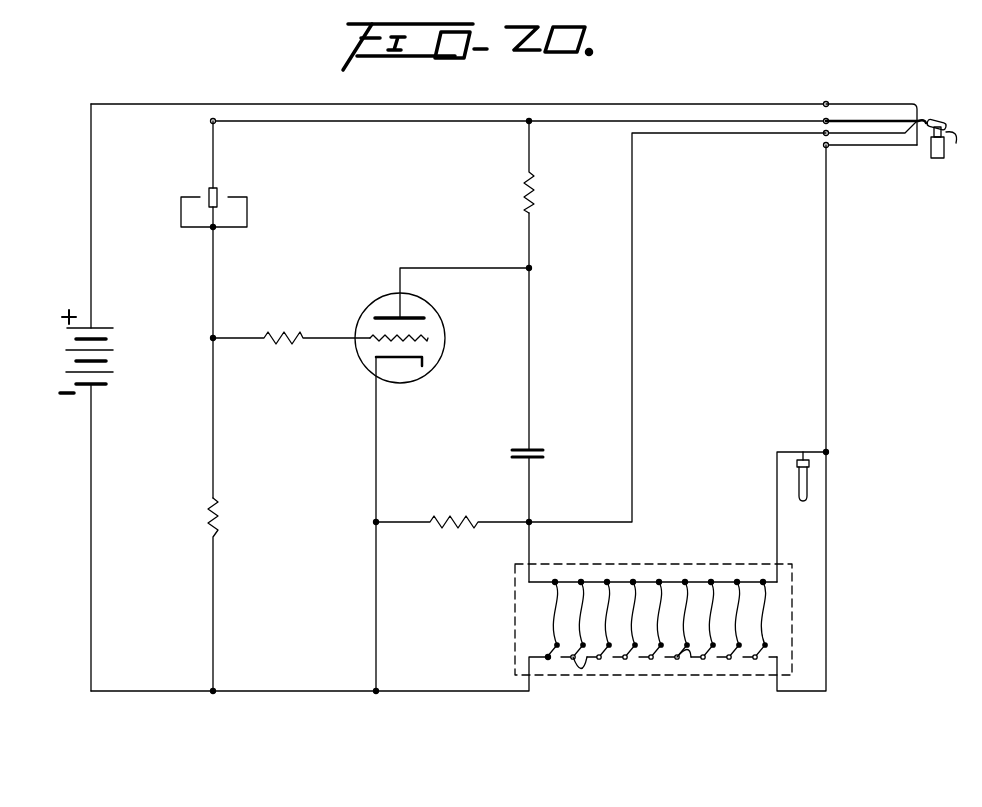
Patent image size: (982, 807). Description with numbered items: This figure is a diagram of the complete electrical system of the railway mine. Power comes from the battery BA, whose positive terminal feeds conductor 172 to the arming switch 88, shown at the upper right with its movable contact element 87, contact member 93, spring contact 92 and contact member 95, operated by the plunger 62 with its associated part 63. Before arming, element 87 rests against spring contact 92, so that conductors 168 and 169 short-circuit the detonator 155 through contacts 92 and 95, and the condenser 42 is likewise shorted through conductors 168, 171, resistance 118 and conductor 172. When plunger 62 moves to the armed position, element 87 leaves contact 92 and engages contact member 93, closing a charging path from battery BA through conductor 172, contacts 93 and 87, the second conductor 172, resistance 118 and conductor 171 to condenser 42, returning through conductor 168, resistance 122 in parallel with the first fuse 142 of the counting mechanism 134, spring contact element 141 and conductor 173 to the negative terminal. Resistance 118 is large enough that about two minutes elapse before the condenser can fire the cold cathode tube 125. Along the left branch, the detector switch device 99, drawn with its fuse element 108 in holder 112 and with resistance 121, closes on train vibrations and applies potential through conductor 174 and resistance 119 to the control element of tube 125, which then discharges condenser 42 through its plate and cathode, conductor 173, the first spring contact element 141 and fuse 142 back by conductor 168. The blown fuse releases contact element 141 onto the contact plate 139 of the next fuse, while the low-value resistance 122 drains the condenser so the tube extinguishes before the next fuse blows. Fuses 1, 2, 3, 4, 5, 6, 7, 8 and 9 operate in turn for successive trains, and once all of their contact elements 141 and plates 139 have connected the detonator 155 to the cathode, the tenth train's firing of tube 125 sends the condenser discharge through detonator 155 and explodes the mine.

The contact member 93 is at (897, 104).
The movable contact element 87 is at (919, 119).
The arming switch 88 is at (947, 125).
The connector 63 is at (961, 146).
The plunger 62 is at (928, 160).
The spring contact 92 is at (893, 137).
The contact member 95 is at (912, 147).
The conductor 172 is at (648, 104).
The detector switch device 99 is at (210, 169).
The fuse 108 is at (207, 192).
The fuse holder 112 is at (234, 198).
The conductor 174 is at (213, 291).
The battery BA is at (99, 326).
The resistance 119 is at (290, 334).
The cold cathode tube 125 is at (433, 321).
The resistance 118 is at (533, 182).
The conductor 171 is at (529, 328).
The conductor 168 is at (632, 330).
The conductor 169 is at (826, 333).
The condenser 42 is at (535, 447).
The conductor 173 is at (318, 690).
The resistance 122 is at (456, 519).
The resistor 121 is at (220, 516).
The detonator 155 is at (808, 491).
The counting mechanism 134 is at (646, 567).
The fuse 142 is at (670, 614).
The spring contact element 141 is at (553, 662).
The contact plate 139 is at (585, 669).
The fuse 1 is at (552, 614).
The fuse 2 is at (577, 614).
The fuse 3 is at (603, 614).
The fuse 4 is at (629, 614).
The fuse 5 is at (655, 614).
The fuse 6 is at (681, 614).
The fuse 7 is at (707, 614).
The fuse 8 is at (733, 614).
The fuse 9 is at (759, 614).